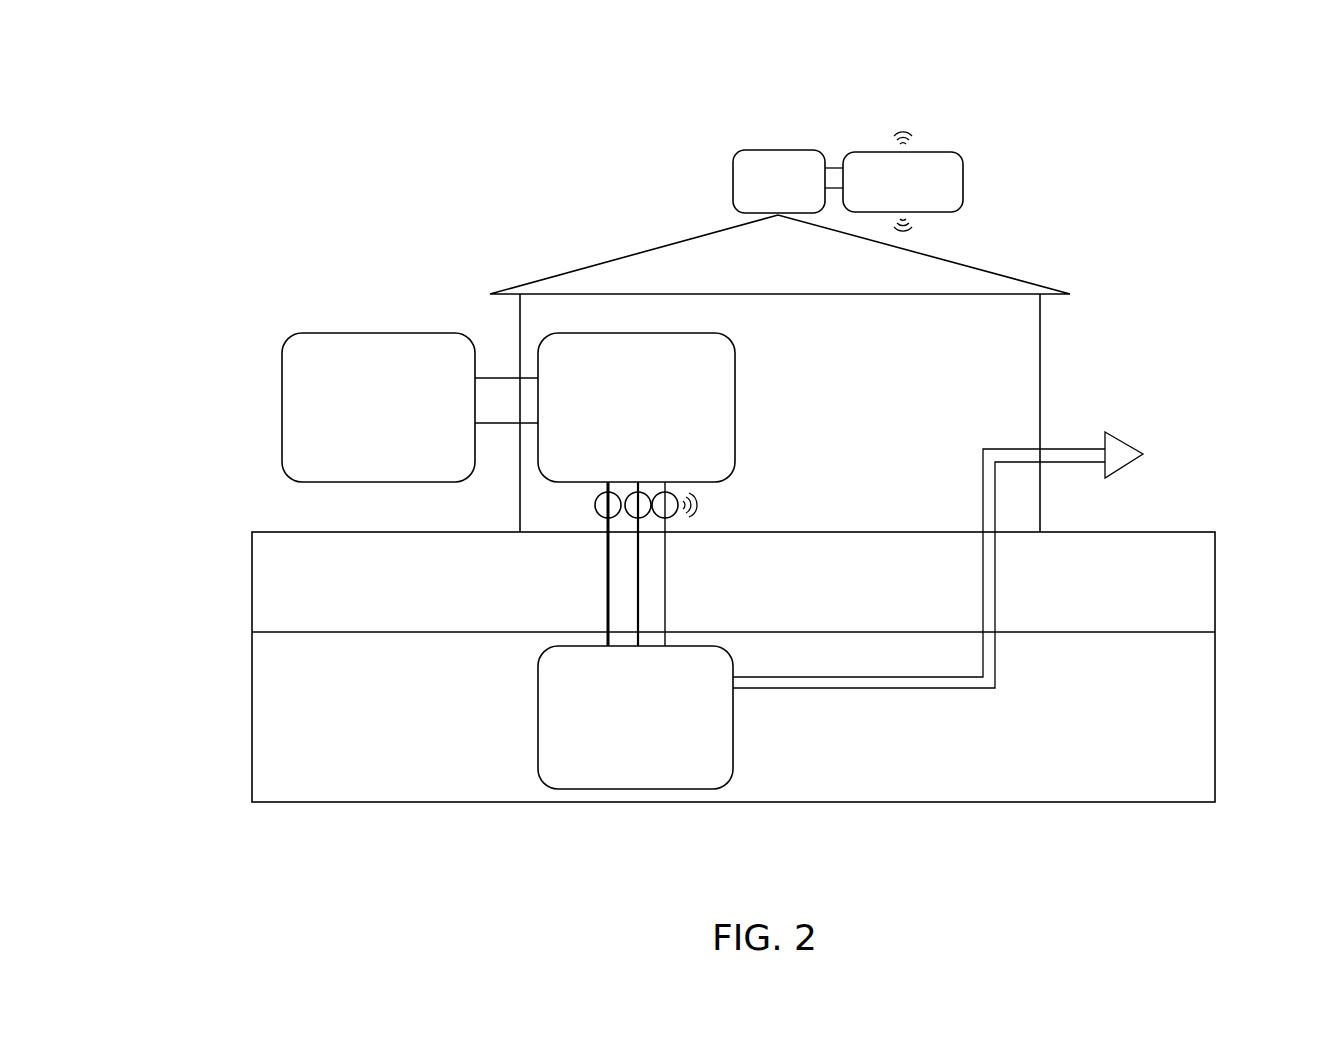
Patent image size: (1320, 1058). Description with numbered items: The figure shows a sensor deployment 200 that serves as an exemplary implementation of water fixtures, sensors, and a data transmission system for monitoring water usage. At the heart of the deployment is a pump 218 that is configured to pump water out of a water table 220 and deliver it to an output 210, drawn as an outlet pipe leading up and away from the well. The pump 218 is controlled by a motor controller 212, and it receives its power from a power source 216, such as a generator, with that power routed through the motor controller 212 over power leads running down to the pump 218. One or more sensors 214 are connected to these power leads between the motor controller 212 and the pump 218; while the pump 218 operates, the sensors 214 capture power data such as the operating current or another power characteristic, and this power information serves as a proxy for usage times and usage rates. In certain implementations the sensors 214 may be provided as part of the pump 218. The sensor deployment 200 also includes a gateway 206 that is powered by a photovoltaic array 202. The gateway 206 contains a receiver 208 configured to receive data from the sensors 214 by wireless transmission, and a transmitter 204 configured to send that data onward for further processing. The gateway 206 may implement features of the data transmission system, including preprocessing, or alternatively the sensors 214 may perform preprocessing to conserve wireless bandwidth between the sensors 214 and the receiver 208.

The sensor deployment 200 is at (238, 124).
The photovoltaic array 202 is at (740, 150).
The transmitter 204 is at (905, 129).
The gateway 206 is at (963, 180).
The receiver 208 is at (908, 226).
The output 210 is at (1120, 440).
The motor controller 212 is at (735, 412).
The sensors 214 is at (697, 504).
The power source 216 is at (318, 333).
The pump 218 is at (663, 789).
The water table 220 is at (1215, 684).